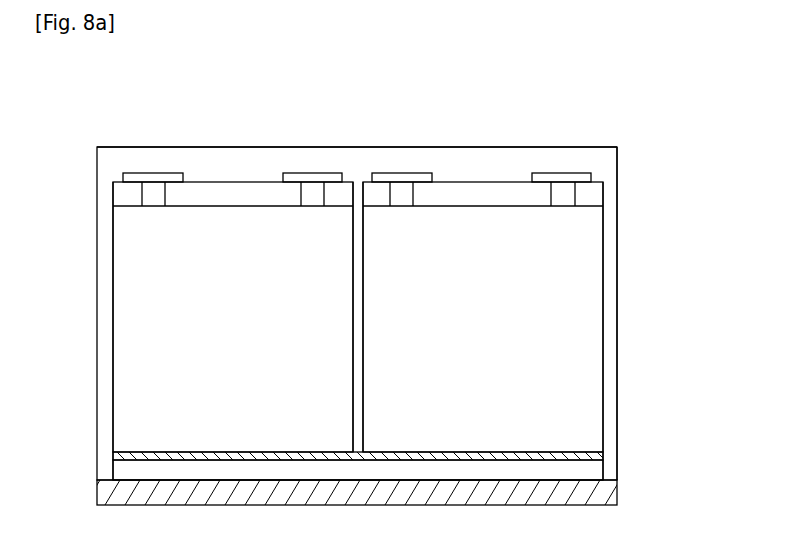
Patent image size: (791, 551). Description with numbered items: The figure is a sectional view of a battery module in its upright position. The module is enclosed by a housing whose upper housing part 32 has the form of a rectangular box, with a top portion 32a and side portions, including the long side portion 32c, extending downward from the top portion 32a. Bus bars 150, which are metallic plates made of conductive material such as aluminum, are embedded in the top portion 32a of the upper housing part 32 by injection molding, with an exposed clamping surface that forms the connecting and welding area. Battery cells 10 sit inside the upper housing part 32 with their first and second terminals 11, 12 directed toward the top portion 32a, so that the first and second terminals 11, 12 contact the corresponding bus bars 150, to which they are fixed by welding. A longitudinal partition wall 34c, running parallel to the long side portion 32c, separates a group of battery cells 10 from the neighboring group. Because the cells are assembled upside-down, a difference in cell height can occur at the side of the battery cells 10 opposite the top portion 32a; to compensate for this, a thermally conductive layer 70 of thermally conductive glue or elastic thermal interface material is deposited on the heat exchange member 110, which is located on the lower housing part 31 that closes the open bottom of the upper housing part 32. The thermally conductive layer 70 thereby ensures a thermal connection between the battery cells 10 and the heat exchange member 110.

The battery cell 10 is at (560, 252).
The first terminal 11 is at (153, 193).
The second terminal 12 is at (312, 196).
The lower housing part 31 is at (612, 488).
The upper housing part 32 is at (622, 116).
The top portion 32a is at (510, 146).
The long side portion 32c is at (617, 333).
The longitudinal partition wall 34c is at (357, 218).
The thermally conductive layer 70 is at (565, 453).
The heat exchange member 110 is at (590, 468).
The bus bar 150 is at (153, 176).